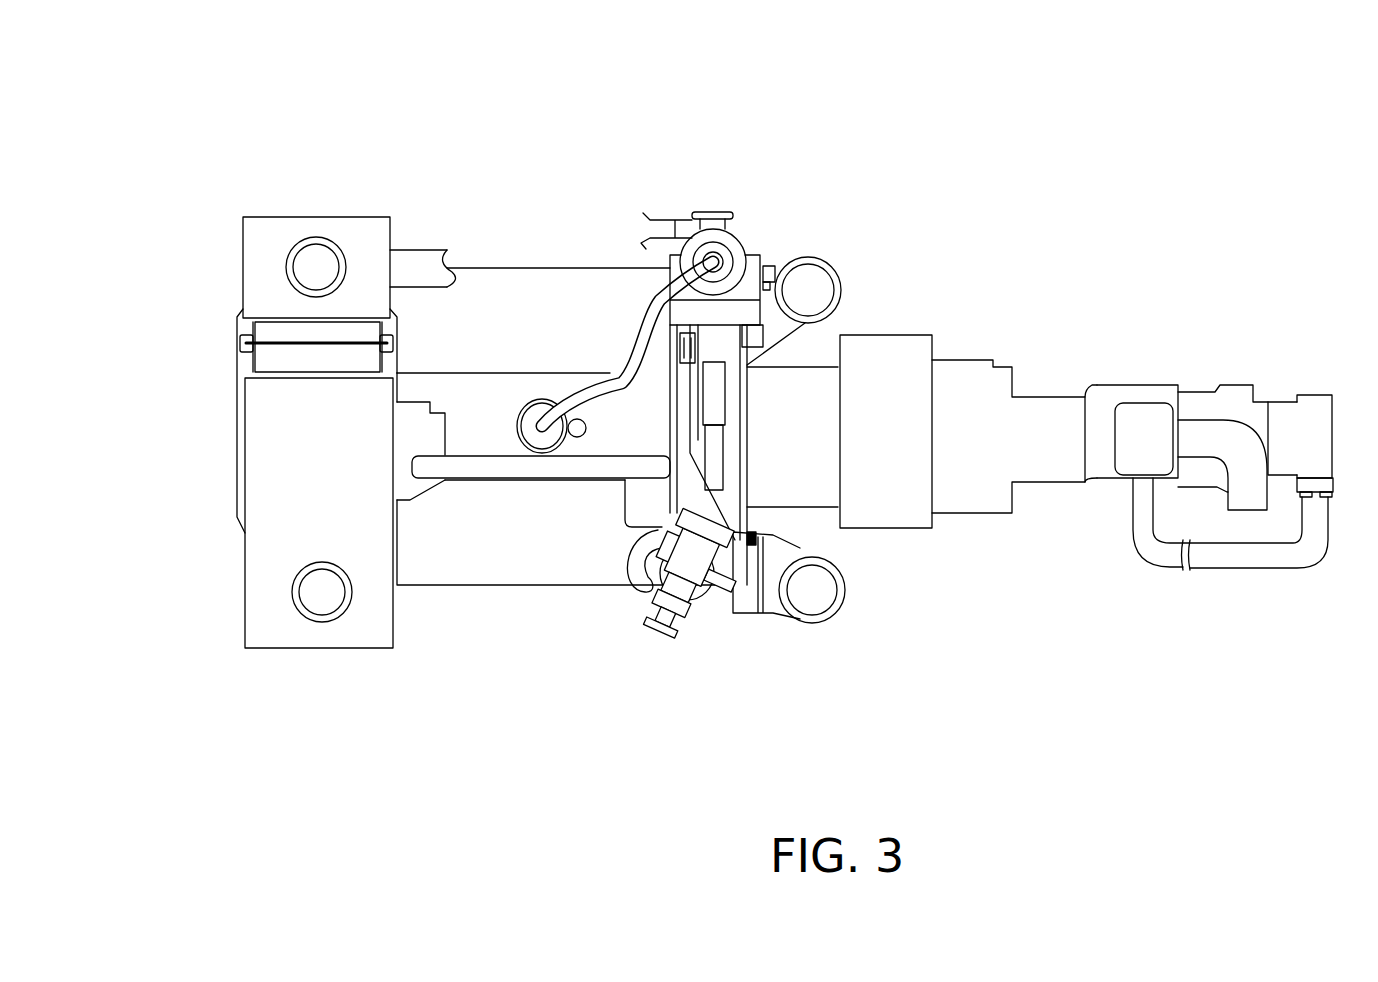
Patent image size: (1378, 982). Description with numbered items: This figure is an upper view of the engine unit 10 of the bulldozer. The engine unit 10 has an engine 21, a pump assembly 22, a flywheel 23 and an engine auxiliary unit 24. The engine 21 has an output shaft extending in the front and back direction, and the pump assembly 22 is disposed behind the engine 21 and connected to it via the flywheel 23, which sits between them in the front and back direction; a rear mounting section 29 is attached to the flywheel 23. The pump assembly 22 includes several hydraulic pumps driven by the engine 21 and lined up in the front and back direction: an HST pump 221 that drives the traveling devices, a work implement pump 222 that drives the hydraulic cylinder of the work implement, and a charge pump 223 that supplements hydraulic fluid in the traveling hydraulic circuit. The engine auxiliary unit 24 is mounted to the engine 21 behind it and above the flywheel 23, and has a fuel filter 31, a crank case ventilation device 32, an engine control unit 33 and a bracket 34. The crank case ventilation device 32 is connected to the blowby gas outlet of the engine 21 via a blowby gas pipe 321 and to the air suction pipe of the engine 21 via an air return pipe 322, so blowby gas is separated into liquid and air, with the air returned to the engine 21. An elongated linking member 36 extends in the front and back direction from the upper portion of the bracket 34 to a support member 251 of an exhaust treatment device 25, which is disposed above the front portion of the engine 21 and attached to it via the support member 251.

The engine unit 10 is at (1175, 130).
The engine 21 is at (502, 197).
The pump assembly 22 is at (1042, 315).
The flywheel 23 is at (740, 577).
The engine auxiliary unit 24 is at (712, 197).
The exhaust treatment device 25 is at (272, 445).
The rear mounting section 29 is at (820, 293).
The fuel filter 31 is at (698, 595).
The crank case ventilation device 32 is at (733, 247).
The engine control unit 33 is at (715, 372).
The bracket 34 is at (682, 392).
The linking member 36 is at (536, 470).
The HST pump 221 is at (877, 495).
The work implement pump 222 is at (1118, 477).
The charge pump 223 is at (1313, 407).
The support member 251 is at (413, 422).
The blowby gas pipe 321 is at (632, 362).
The air return pipe 322 is at (663, 218).